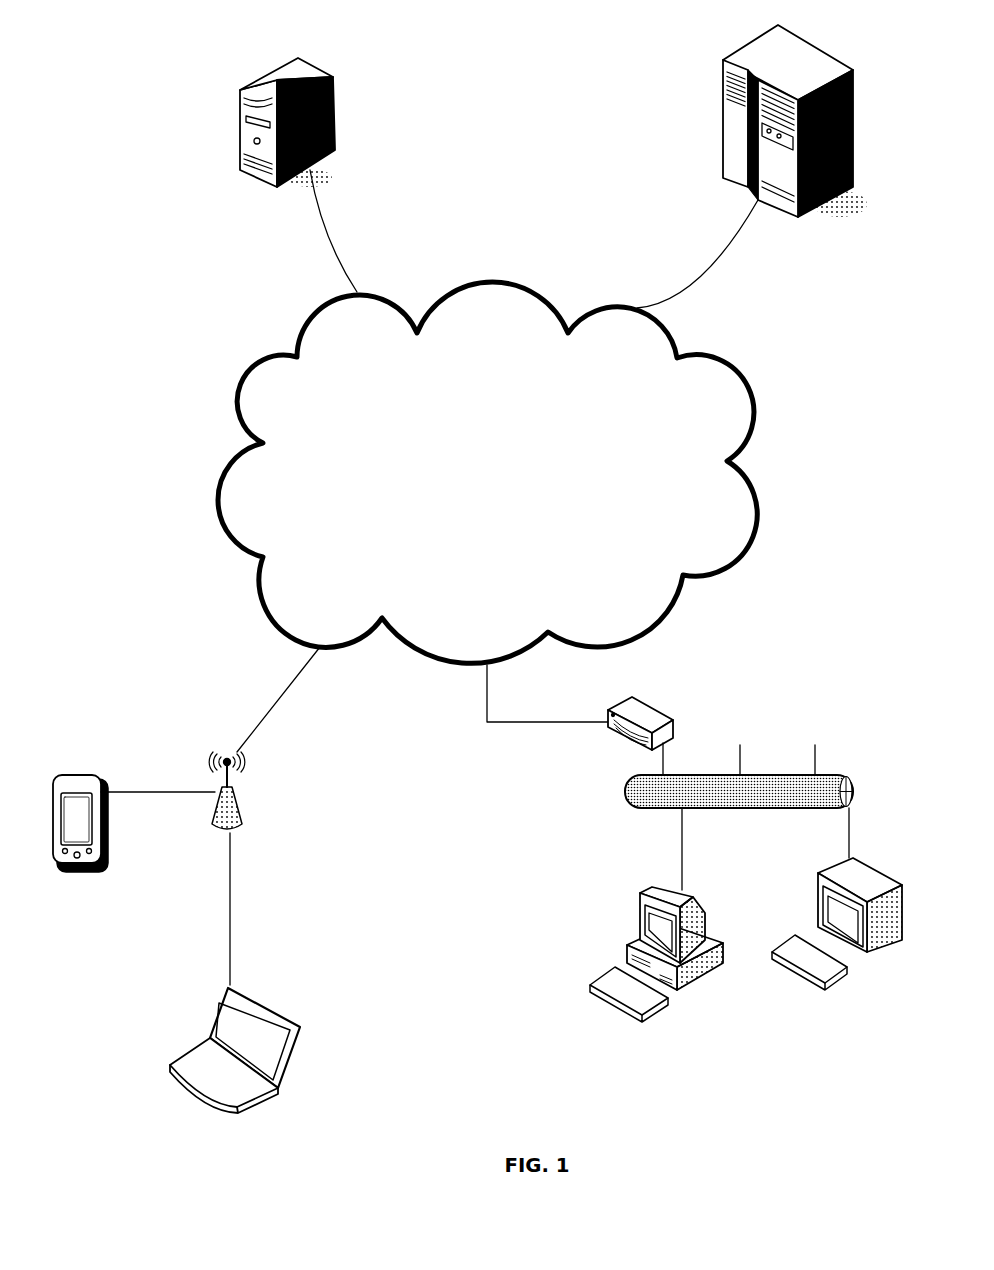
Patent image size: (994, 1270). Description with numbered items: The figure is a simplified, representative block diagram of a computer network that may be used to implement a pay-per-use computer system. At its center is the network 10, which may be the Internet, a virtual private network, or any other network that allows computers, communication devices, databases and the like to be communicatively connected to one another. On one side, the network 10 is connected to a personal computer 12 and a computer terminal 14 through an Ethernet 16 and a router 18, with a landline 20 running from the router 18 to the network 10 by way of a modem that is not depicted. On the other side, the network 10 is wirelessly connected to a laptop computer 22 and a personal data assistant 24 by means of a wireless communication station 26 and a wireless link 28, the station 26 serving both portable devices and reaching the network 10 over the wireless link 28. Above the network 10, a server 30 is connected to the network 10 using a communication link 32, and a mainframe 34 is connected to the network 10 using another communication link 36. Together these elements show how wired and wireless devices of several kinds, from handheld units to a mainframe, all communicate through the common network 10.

The network 10 is at (185, 362).
The personal computer 12 is at (635, 938).
The computer terminal 14 is at (887, 875).
The Ethernet 16 is at (845, 777).
The router 18 is at (673, 720).
The landline 20 is at (528, 723).
The laptop computer 22 is at (257, 1102).
The personal data assistant 24 is at (83, 783).
The wireless communication station 26 is at (242, 825).
The wireless link 28 is at (270, 708).
The server 30 is at (333, 122).
The communication link 32 is at (340, 272).
The mainframe 34 is at (810, 217).
The communication link 36 is at (723, 253).